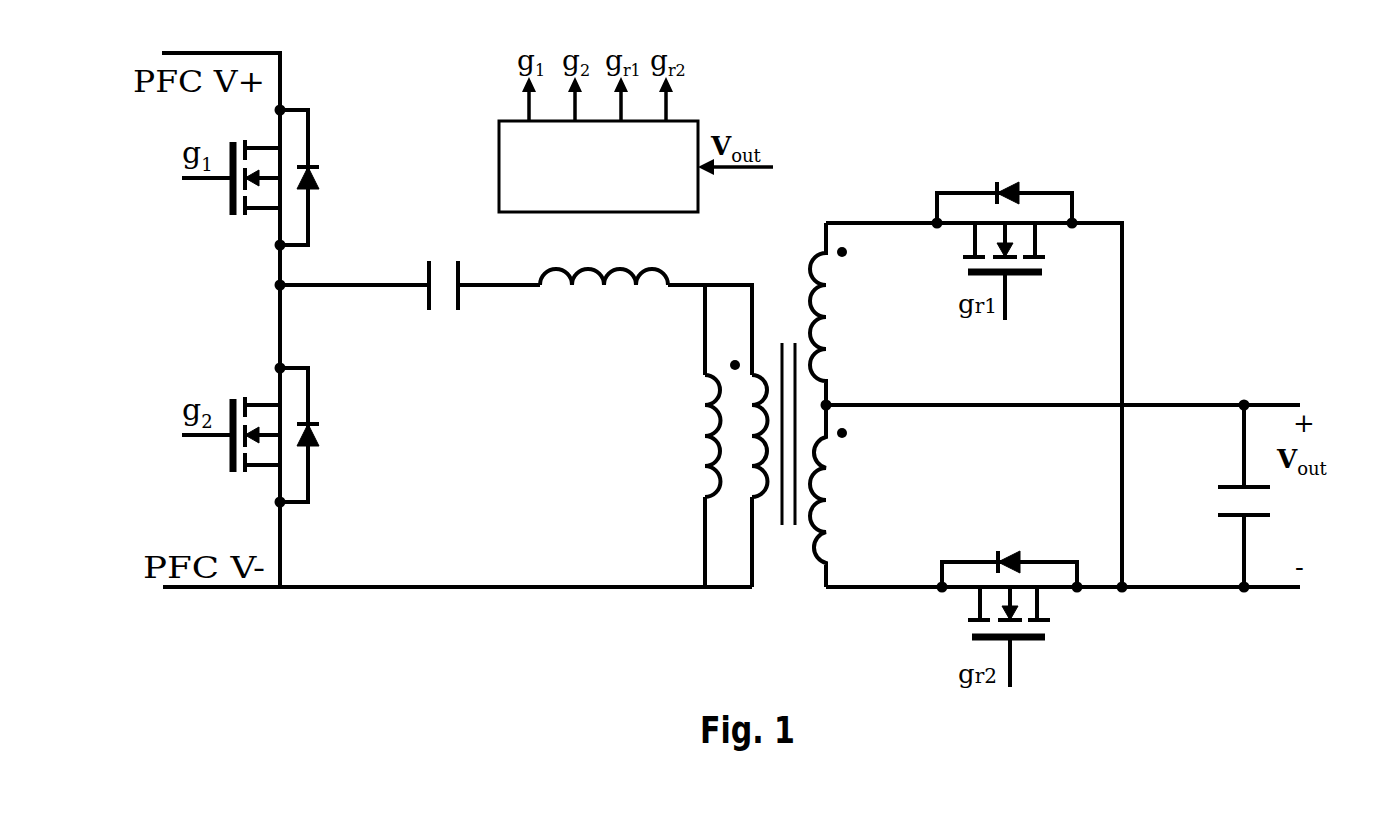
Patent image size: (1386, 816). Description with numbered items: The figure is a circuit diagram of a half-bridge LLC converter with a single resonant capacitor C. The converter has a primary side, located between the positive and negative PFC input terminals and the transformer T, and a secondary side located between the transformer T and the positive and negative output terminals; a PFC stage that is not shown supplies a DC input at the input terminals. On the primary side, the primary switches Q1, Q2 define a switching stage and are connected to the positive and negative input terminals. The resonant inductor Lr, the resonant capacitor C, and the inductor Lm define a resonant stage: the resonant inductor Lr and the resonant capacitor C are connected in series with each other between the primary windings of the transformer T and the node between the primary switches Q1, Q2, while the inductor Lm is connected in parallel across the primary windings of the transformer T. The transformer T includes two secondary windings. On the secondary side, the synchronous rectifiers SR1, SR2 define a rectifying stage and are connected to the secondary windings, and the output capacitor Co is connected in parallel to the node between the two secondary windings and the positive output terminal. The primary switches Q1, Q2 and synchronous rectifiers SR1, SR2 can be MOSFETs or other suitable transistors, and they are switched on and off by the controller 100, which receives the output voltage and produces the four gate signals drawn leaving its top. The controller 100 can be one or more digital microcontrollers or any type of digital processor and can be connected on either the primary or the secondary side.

The controller 100 is at (499, 146).
The primary switch Q1 is at (269, 168).
The primary switch Q2 is at (269, 430).
The resonant capacitor C is at (443, 265).
The resonant inductor Lr is at (604, 252).
The inductor Lm is at (685, 428).
The transformer T is at (789, 405).
The synchronous rectifier SR1 is at (972, 241).
The synchronous rectifier SR2 is at (977, 606).
The output capacitor Co is at (1231, 480).